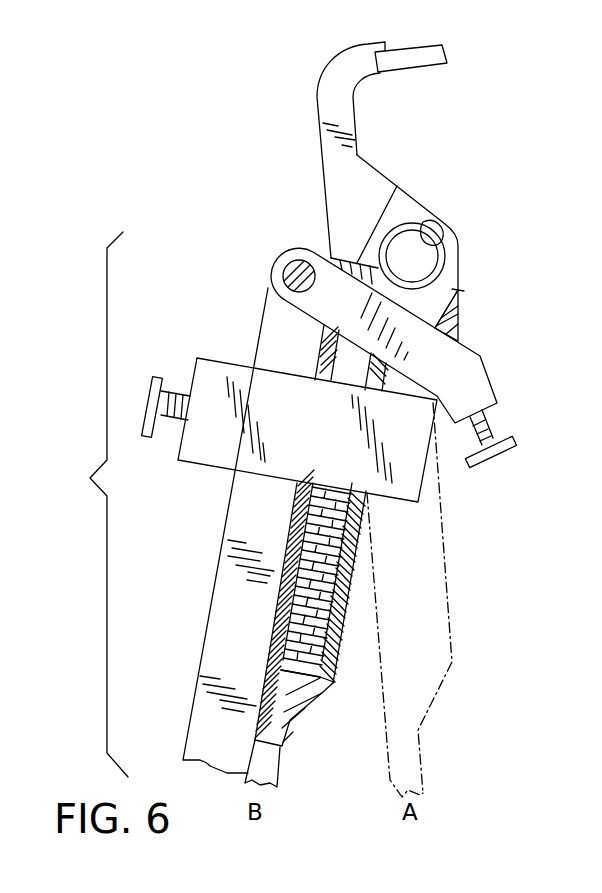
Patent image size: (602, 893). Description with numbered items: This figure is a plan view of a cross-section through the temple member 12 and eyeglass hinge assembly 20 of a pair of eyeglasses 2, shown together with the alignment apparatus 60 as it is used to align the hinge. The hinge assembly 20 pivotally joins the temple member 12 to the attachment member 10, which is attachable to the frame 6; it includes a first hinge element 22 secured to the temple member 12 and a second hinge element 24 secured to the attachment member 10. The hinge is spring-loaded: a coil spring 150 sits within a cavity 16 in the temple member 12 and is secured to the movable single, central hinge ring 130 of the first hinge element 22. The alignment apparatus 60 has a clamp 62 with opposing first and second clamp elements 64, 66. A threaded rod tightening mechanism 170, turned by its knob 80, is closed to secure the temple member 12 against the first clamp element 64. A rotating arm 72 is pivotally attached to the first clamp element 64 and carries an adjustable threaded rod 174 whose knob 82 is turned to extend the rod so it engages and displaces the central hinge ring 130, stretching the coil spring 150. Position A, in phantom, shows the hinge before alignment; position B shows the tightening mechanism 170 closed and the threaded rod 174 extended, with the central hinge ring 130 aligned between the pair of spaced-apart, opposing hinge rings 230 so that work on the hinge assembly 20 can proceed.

The eyeglasses 2 is at (519, 74).
The frame 6 is at (433, 53).
The attachment member 10 is at (320, 98).
The temple member 12 is at (270, 778).
The cavity 16 is at (300, 642).
The eyeglass hinge assembly 20 is at (425, 183).
The first hinge element 22 is at (458, 290).
The second hinge element 24 is at (398, 203).
The alignment apparatus 60 is at (86, 504).
The clamp 62 is at (217, 480).
The first clamp element 64 is at (198, 737).
The second clamp element 66 is at (415, 457).
The rotating arm 72 is at (328, 260).
The knob 80 is at (153, 387).
The knob 82 is at (500, 448).
The single, central hinge ring 130 is at (421, 241).
The coil spring 150 is at (293, 618).
The threaded rod tightening mechanism 170 is at (183, 393).
The adjustable threaded rod 174 is at (455, 333).
The spaced-apart, opposing hinge rings 230 is at (445, 225).